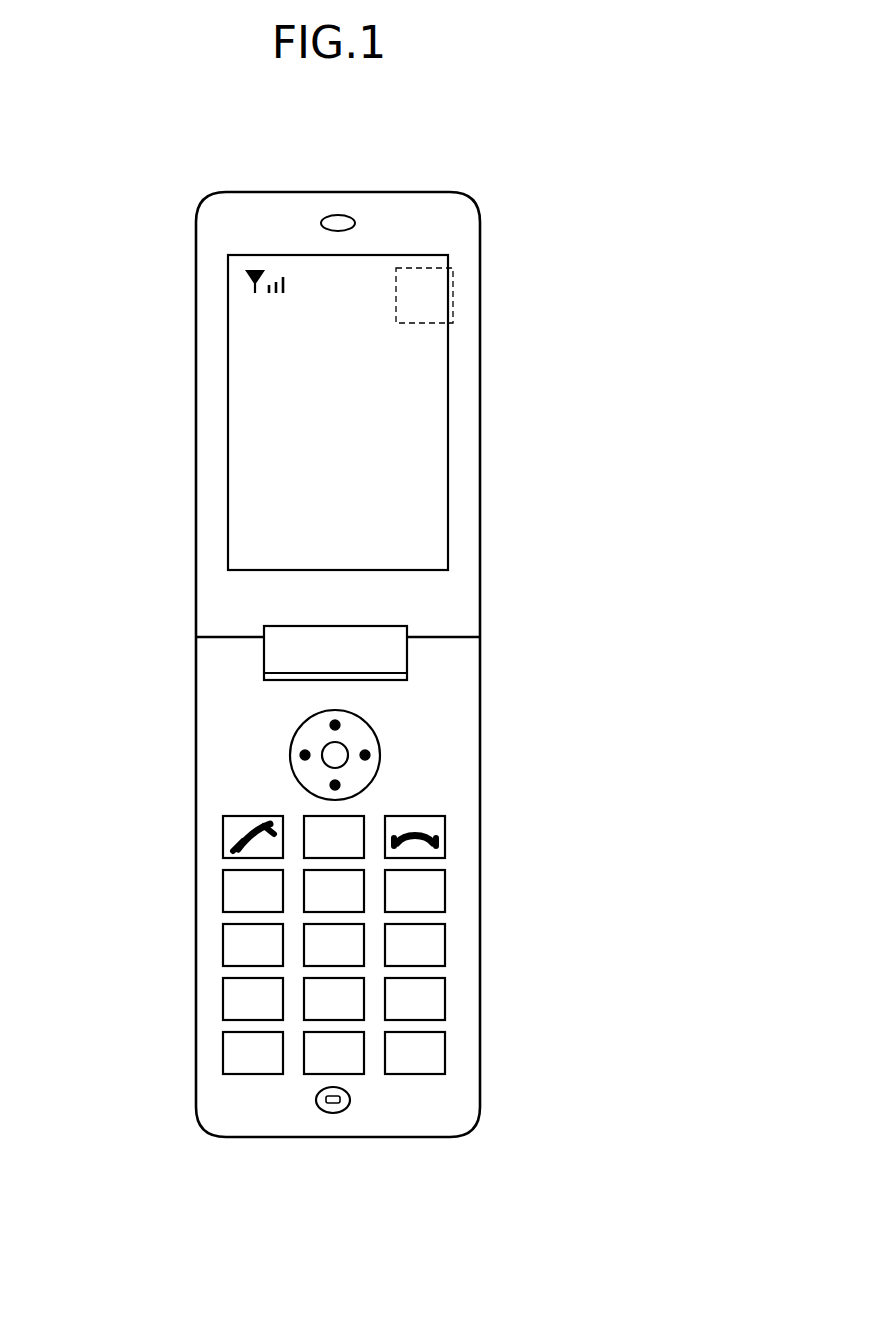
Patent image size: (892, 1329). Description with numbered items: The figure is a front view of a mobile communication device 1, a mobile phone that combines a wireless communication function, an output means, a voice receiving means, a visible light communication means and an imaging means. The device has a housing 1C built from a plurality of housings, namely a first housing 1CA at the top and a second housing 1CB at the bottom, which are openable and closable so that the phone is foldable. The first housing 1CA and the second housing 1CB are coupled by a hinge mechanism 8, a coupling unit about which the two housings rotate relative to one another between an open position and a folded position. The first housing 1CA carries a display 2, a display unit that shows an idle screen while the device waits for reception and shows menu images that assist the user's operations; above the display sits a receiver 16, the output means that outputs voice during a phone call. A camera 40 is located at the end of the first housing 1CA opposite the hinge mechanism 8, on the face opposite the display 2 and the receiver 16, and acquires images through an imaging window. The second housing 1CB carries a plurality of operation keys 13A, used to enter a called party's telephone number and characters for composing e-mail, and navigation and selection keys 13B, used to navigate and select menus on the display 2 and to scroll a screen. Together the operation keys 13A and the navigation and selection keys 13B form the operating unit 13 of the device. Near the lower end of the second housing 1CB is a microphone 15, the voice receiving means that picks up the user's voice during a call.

The mobile communication device 1 is at (508, 158).
The housing 1C is at (100, 585).
The first housing 1CA is at (242, 600).
The second housing 1CB is at (242, 720).
The display 2 is at (245, 313).
The hinge mechanism 8 is at (512, 634).
The operating unit 13 is at (570, 733).
The operation keys 13A is at (452, 812).
The navigation and selection keys 13B is at (372, 752).
The microphone 15 is at (333, 1113).
The receiver 16 is at (338, 214).
The camera 40 is at (453, 293).